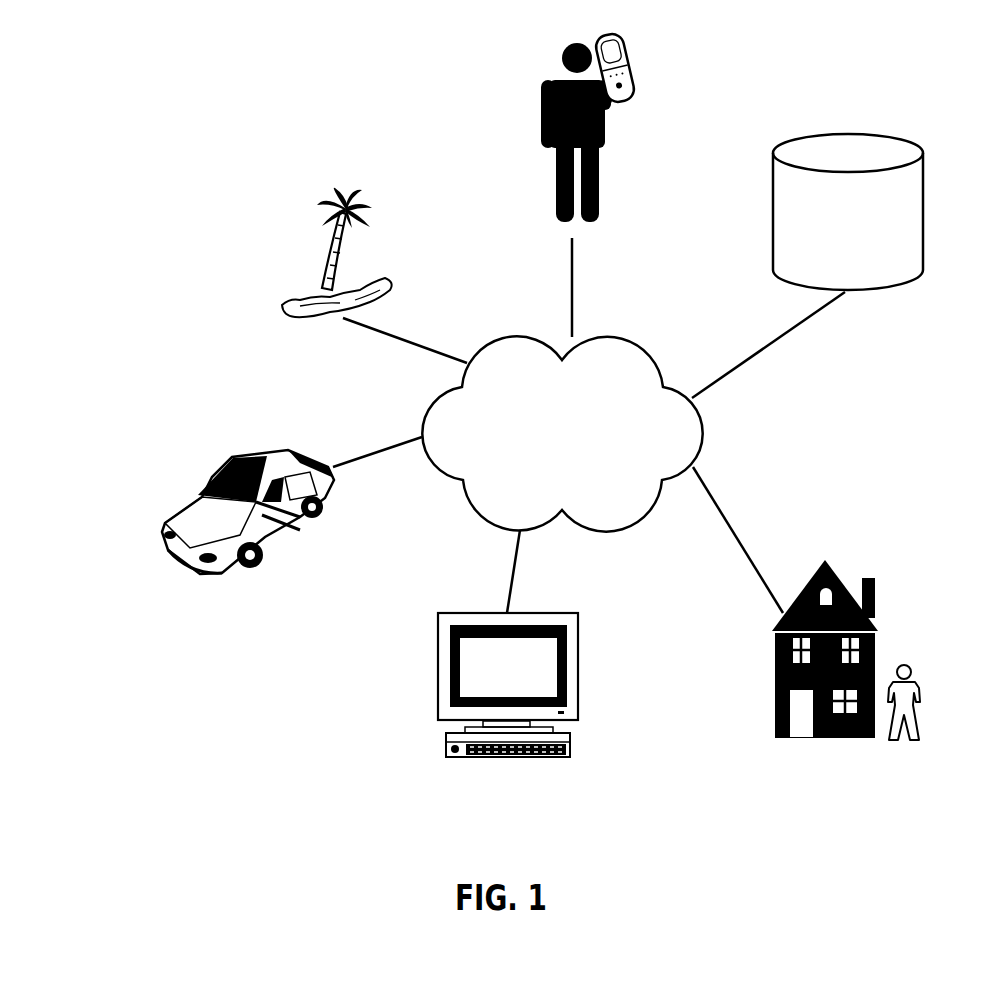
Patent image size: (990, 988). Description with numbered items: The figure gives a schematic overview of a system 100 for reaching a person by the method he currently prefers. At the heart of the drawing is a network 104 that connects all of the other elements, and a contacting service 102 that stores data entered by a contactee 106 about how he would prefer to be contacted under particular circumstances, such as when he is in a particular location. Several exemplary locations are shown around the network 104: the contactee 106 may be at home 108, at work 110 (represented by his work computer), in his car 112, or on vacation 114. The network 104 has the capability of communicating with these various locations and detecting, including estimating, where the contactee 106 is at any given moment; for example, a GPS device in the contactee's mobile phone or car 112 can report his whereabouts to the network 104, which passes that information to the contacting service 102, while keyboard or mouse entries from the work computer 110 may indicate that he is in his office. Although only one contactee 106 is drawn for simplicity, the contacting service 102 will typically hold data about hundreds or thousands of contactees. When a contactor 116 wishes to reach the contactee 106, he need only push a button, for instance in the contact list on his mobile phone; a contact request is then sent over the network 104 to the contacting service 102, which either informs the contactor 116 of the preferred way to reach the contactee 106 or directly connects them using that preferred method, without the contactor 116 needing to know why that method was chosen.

The system 100 is at (128, 95).
The contacting service 102 is at (828, 267).
The network 104 is at (544, 461).
The contactee 106 is at (920, 700).
The home 108 is at (870, 578).
The work 110 is at (448, 613).
The car 112 is at (205, 492).
The vacation 114 is at (353, 197).
The contactor 116 is at (543, 82).